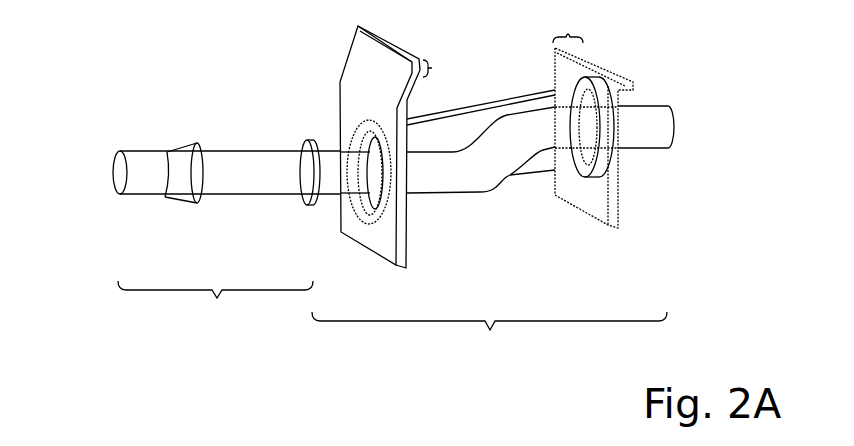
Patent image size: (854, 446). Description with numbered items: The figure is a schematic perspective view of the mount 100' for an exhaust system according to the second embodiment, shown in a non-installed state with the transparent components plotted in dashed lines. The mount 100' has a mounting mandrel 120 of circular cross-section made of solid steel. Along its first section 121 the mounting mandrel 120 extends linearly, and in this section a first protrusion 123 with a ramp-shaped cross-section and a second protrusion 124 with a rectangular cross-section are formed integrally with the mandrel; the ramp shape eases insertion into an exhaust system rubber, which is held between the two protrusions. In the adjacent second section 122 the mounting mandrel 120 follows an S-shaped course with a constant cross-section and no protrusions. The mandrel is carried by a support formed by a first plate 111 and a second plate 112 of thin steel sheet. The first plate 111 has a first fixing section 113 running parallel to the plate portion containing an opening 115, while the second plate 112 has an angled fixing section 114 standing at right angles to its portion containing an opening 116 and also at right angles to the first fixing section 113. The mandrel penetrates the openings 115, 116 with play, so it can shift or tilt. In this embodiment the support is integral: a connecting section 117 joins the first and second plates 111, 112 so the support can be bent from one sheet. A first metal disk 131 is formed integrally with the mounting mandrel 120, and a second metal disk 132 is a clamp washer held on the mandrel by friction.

The mount 100' is at (61, 33).
The first plate 111 is at (393, 267).
The second plate 112 is at (603, 226).
The first fixing section 113 is at (447, 68).
The angled fixing section 114 is at (572, 25).
The opening 115 is at (370, 227).
The opening 116 is at (573, 171).
The connecting section 117 is at (515, 102).
The mounting mandrel 120 is at (142, 151).
The first section 121 is at (215, 311).
The second section 122 is at (489, 341).
The first protrusion 123 is at (180, 203).
The second protrusion 124 is at (304, 205).
The first metal disk 131 is at (356, 132).
The second metal disk 132 is at (610, 171).